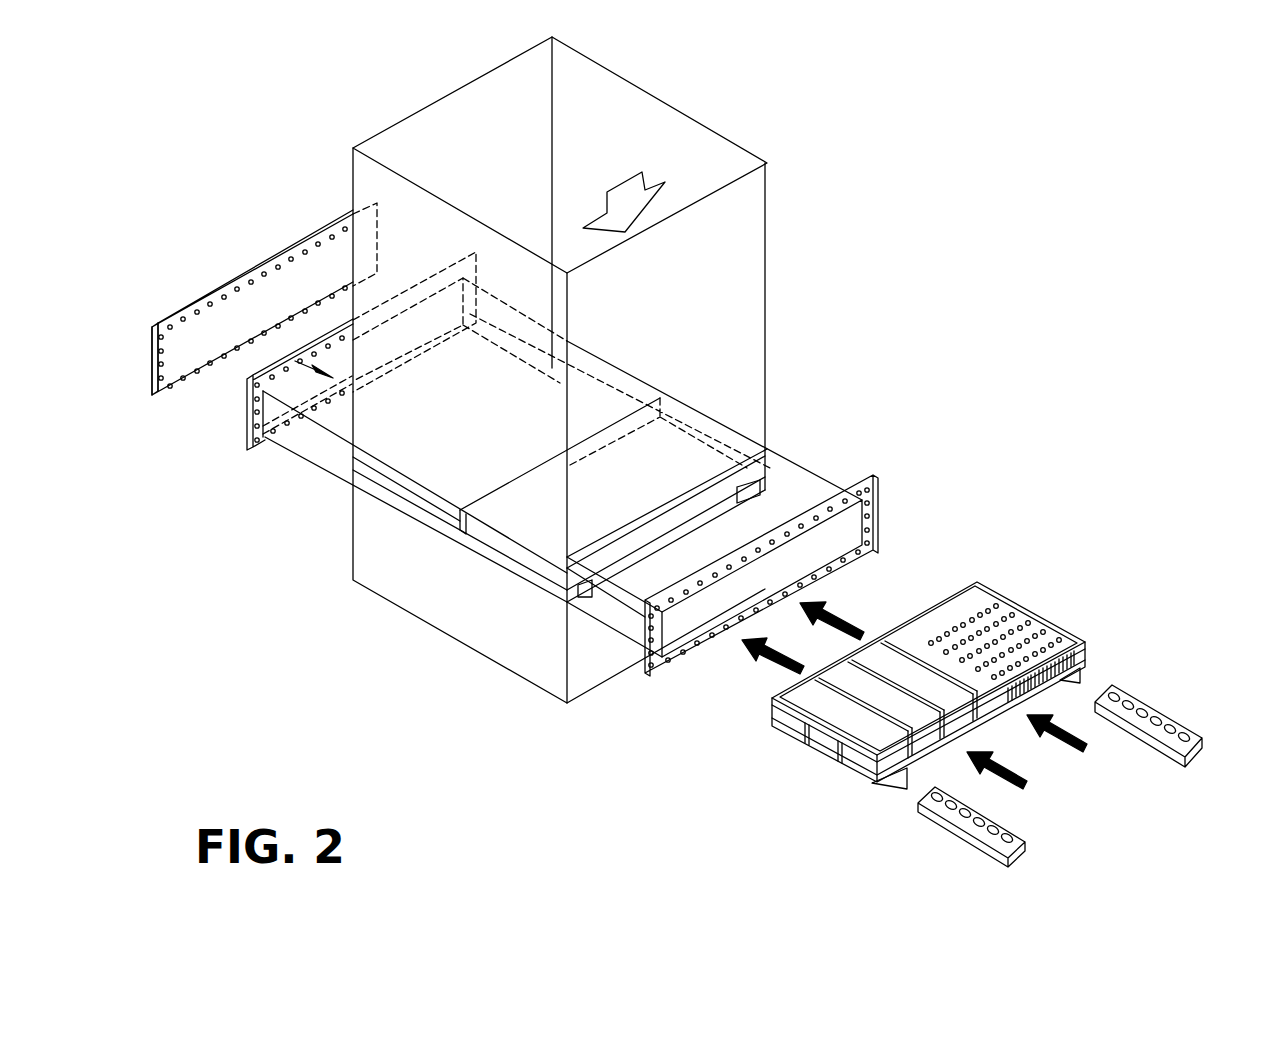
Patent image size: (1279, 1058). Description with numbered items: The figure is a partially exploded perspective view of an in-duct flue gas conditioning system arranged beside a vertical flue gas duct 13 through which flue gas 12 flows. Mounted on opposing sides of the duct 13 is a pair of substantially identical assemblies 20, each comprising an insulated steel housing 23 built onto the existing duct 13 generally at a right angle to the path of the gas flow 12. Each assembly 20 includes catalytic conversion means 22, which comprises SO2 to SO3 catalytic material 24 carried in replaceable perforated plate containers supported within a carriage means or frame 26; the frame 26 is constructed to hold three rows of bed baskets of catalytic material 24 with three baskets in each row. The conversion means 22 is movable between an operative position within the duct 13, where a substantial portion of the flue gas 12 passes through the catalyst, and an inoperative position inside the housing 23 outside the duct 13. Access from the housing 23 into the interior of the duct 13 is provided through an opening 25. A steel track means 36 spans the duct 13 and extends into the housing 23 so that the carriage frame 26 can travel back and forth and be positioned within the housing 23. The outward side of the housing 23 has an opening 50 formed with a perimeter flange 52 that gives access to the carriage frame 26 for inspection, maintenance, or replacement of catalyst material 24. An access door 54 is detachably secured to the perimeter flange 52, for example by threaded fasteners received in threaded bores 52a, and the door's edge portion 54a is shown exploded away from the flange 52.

The flue gas 12 is at (647, 183).
The flue gas duct 13 is at (770, 215).
The assembly 20 is at (322, 486).
The catalytic conversion means 22 is at (1045, 603).
The housing 23 is at (325, 440).
The catalytic material 24 is at (1073, 632).
The opening 25 is at (724, 493).
The carriage means 26 is at (977, 582).
The track means 36 is at (1186, 724).
The opening 50 is at (283, 363).
The perimeter flange 52 is at (247, 436).
The threaded bore 52a is at (812, 580).
The access door 54 is at (274, 248).
The cover plate edge 54a is at (178, 323).